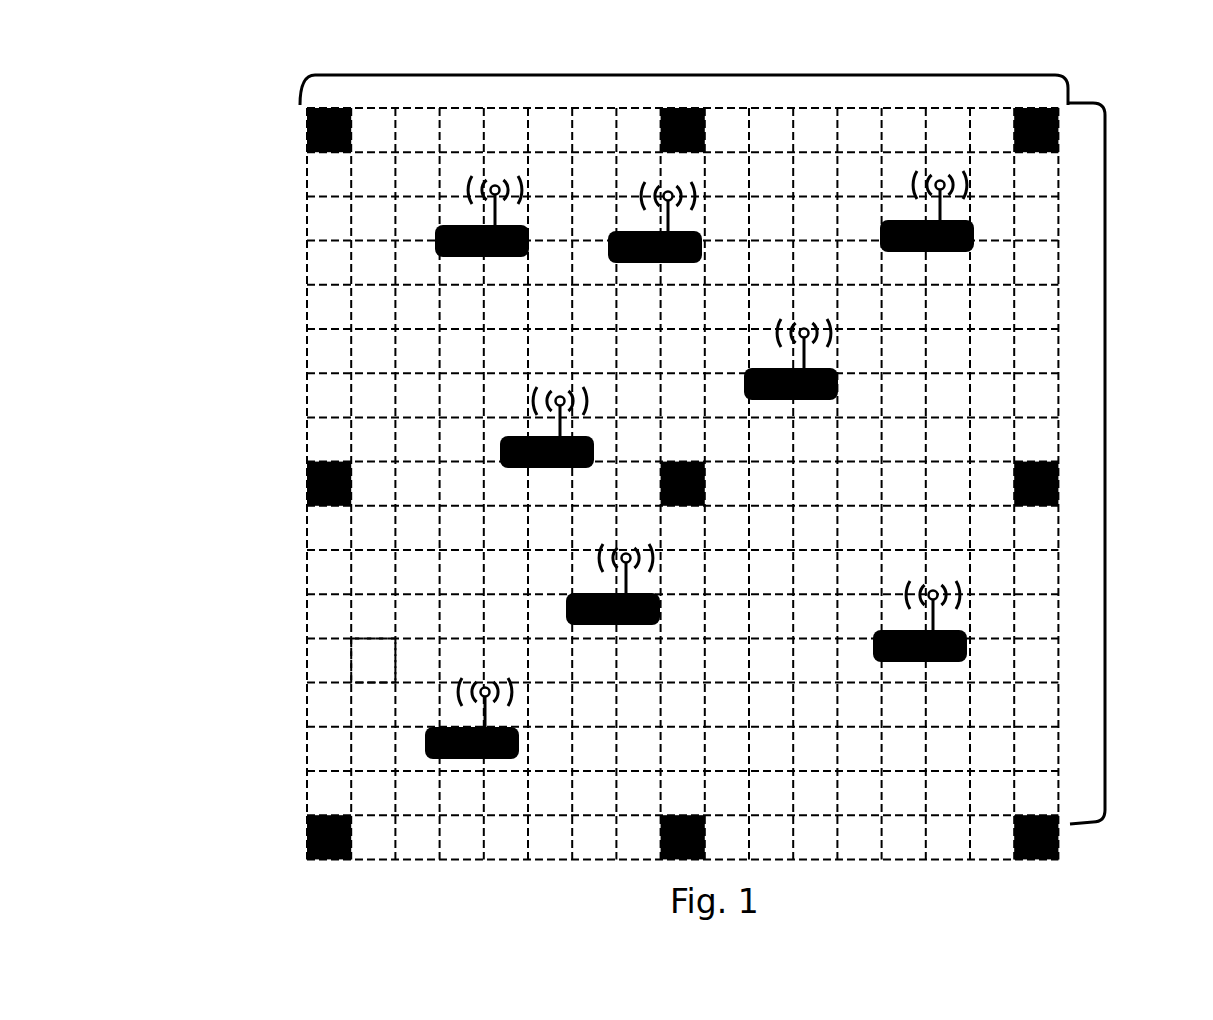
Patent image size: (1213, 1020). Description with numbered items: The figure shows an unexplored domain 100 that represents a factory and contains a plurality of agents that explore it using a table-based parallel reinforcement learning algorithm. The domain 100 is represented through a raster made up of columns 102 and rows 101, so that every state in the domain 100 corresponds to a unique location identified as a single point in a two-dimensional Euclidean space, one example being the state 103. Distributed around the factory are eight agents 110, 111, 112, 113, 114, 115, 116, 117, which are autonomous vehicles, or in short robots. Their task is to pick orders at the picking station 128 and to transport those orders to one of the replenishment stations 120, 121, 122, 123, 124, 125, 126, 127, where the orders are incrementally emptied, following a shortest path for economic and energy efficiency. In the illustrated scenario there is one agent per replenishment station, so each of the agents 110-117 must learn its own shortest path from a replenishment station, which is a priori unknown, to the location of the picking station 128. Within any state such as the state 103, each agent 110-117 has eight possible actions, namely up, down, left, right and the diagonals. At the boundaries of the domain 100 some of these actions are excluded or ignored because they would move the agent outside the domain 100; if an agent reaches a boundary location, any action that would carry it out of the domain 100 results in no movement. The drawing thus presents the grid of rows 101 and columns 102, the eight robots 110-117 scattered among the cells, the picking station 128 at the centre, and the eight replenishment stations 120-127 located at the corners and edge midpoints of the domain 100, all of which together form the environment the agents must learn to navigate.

The domain 100 is at (230, 336).
The rows 101 is at (1105, 455).
The columns 102 is at (678, 75).
The state 103 is at (370, 663).
The agent 110 is at (510, 258).
The agent 111 is at (575, 469).
The agent 112 is at (470, 759).
The agent 113 is at (950, 252).
The agent 114 is at (946, 663).
The agent 115 is at (818, 401).
The agent 116 is at (640, 625).
The agent 117 is at (683, 263).
The replenishment station 120 is at (307, 137).
The replenishment station 121 is at (663, 108).
The replenishment station 122 is at (1058, 138).
The replenishment station 123 is at (1058, 491).
The replenishment station 124 is at (1060, 822).
The replenishment station 125 is at (681, 814).
The replenishment station 126 is at (307, 830).
The replenishment station 127 is at (307, 463).
The picking station 128 is at (680, 461).